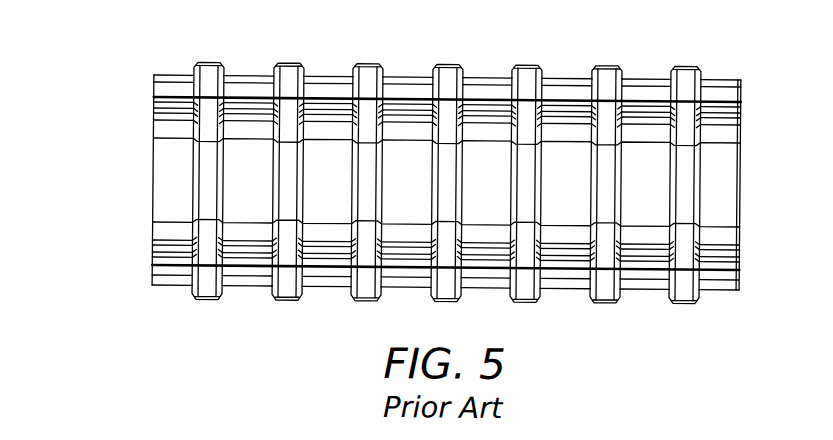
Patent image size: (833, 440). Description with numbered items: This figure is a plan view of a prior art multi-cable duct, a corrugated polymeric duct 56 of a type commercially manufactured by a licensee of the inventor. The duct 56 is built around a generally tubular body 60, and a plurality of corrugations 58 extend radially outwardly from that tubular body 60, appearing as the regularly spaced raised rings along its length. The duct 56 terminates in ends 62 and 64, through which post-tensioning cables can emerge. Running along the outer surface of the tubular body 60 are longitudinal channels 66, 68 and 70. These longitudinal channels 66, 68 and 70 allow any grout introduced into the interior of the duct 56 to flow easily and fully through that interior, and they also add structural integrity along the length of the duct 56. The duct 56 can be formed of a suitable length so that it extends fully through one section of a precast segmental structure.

The corrugated polymeric duct 56 is at (558, 75).
The corrugations 58 is at (363, 62).
The tubular body 60 is at (562, 285).
The end 62 is at (152, 200).
The end 64 is at (740, 197).
The longitudinal channel 66 is at (180, 100).
The longitudinal channel 68 is at (715, 267).
The longitudinal channel 70 is at (328, 75).